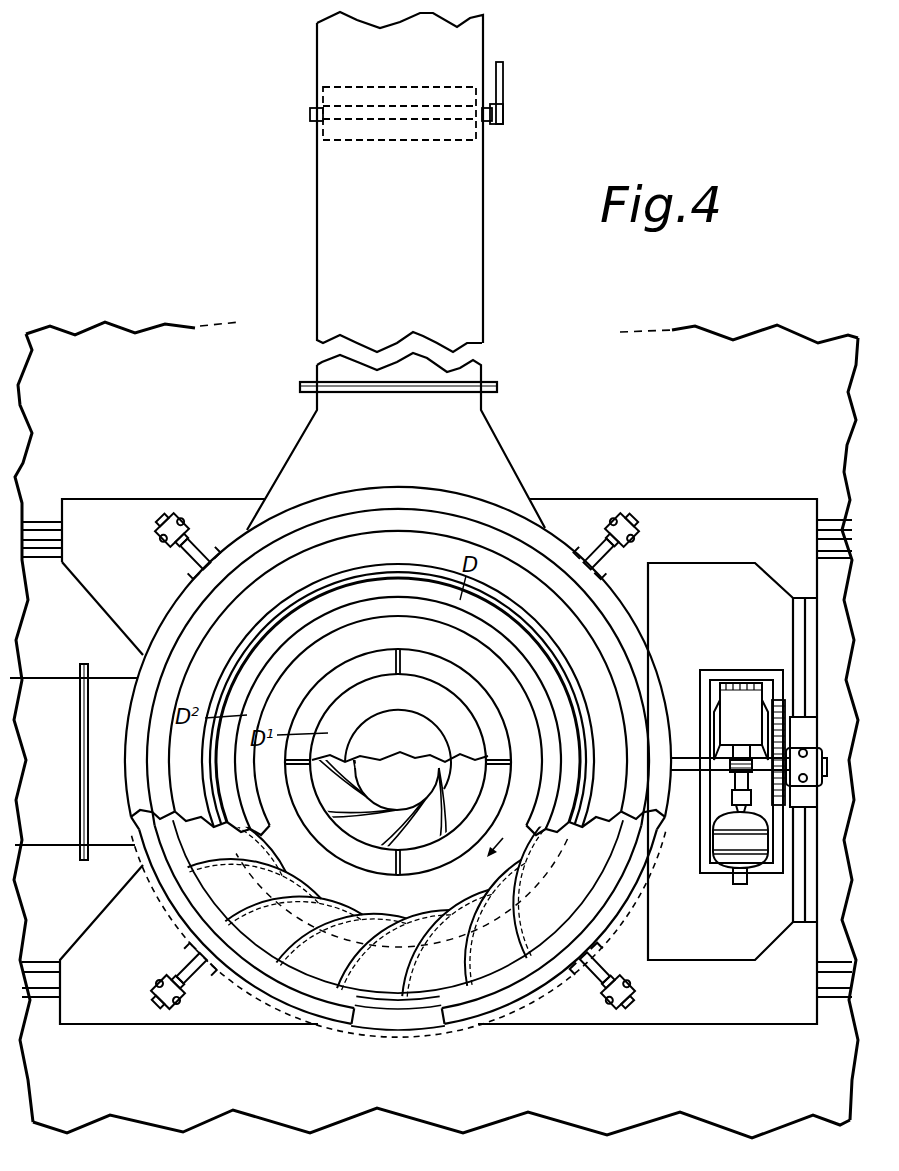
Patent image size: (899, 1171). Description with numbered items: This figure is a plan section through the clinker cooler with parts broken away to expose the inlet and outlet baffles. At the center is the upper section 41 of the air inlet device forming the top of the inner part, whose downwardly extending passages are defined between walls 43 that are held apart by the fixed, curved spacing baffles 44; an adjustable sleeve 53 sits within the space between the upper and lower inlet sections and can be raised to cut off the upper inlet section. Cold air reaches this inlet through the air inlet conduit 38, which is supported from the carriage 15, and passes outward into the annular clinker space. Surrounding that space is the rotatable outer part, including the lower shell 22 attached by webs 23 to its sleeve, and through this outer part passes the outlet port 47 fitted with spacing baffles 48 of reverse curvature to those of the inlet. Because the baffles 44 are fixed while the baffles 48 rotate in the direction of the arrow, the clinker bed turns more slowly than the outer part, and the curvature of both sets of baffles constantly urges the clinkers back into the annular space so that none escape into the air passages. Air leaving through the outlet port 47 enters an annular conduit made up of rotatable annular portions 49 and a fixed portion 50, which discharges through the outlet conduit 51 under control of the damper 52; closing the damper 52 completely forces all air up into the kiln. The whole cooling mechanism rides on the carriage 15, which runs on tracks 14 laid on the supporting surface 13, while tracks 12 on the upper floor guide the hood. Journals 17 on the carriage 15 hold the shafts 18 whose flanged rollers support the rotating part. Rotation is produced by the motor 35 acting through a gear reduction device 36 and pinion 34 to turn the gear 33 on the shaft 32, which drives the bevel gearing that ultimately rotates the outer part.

The tracks 12 is at (43, 528).
The supporting surface 13 is at (366, 1093).
The tracks 14 is at (817, 1008).
The carriage 15 is at (688, 510).
The journals 17 is at (160, 526).
The shafts 18 is at (193, 563).
The lower shell 22 is at (383, 903).
The webs 23 is at (402, 668).
The shaft 32 is at (693, 772).
The gear 33 is at (786, 706).
The pinion 34 is at (780, 797).
The motor 35 is at (738, 845).
The gear reduction device 36 is at (740, 690).
The air inlet conduit 38 is at (95, 770).
The upper section 41 is at (346, 688).
The walls 43 is at (348, 828).
The spacing baffles 44 is at (438, 832).
The outlet port 47 is at (430, 983).
The spacing baffles 48 is at (542, 883).
The annular portions 49 is at (348, 527).
The fixed portion 50 is at (392, 492).
The outlet conduit 51 is at (467, 223).
The controlling damper 52 is at (400, 140).
The adjustable sleeve 53 is at (373, 797).